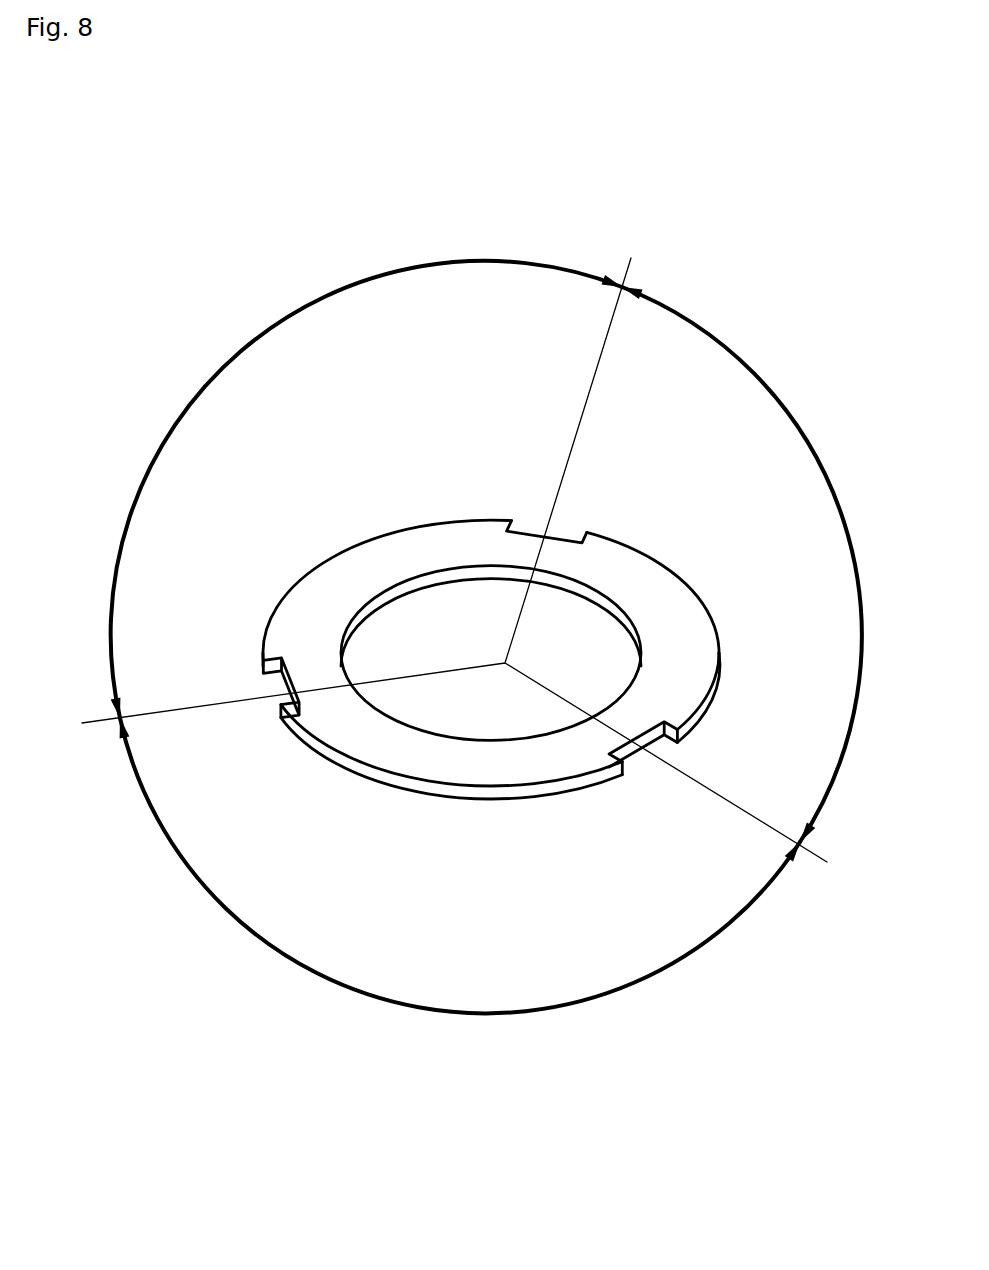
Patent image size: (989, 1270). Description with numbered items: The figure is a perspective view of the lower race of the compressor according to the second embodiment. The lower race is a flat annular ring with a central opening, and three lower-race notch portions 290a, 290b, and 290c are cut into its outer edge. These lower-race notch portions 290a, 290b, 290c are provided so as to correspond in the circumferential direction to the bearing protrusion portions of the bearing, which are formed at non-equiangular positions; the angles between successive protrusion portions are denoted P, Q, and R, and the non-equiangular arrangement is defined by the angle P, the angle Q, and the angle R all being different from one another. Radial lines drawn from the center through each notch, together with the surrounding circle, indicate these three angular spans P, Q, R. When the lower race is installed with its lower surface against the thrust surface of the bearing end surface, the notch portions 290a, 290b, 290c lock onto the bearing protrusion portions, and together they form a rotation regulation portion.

The lower-race notch portion 290a is at (278, 705).
The lower-race notch portion 290b is at (570, 527).
The lower-race notch portion 290c is at (642, 763).
The angle P is at (366, 489).
The angle Q is at (752, 564).
The angle R is at (460, 885).